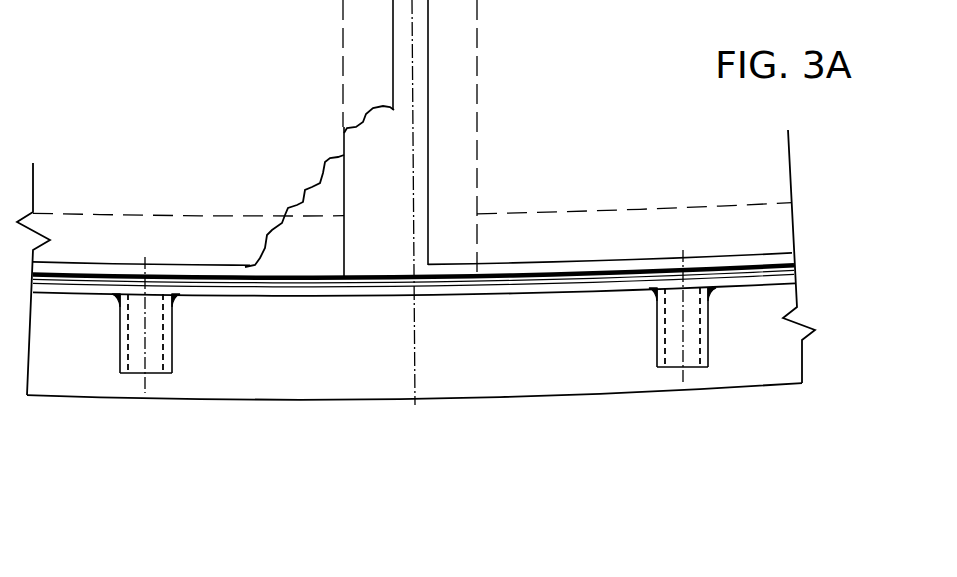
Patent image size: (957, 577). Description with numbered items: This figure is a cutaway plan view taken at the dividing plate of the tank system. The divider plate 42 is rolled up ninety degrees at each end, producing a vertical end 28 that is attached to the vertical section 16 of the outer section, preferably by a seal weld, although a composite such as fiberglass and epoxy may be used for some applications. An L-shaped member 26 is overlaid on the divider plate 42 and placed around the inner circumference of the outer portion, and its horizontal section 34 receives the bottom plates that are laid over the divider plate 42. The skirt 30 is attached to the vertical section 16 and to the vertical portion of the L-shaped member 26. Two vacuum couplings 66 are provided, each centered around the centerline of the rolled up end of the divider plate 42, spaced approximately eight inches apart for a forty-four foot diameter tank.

The vertical section 16 is at (563, 295).
The L-shaped member 26 is at (318, 217).
The vertical end 28 is at (413, 271).
The skirt 30 is at (587, 273).
The horizontal section 34 is at (110, 228).
The divider plate 42 is at (377, 177).
The vacuum coupling 66 is at (122, 373).